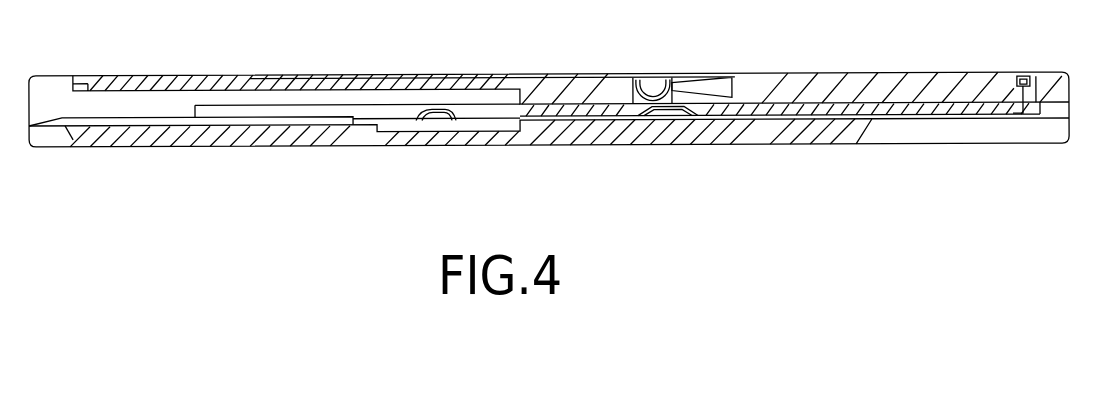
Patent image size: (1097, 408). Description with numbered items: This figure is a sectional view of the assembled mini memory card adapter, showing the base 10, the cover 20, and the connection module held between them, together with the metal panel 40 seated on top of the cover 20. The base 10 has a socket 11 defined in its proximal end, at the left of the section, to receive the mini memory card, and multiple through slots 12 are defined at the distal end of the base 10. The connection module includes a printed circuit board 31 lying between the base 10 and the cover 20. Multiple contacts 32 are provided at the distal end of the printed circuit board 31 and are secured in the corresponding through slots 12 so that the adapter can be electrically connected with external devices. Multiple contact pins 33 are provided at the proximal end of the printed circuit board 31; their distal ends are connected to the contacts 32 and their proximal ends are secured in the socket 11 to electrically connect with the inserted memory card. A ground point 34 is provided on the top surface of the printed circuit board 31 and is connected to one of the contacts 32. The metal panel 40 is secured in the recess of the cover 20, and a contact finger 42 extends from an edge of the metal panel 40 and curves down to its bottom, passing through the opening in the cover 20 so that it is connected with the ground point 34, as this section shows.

The base 10 is at (748, 138).
The socket 11 is at (150, 109).
The through slots 12 is at (983, 140).
The cover 20 is at (930, 92).
The printed circuit board 31 is at (850, 104).
The contacts 32 is at (745, 113).
The contact pins 33 is at (480, 122).
The ground point 34 is at (670, 108).
The metal panel 40 is at (696, 80).
The contact finger 42 is at (672, 100).